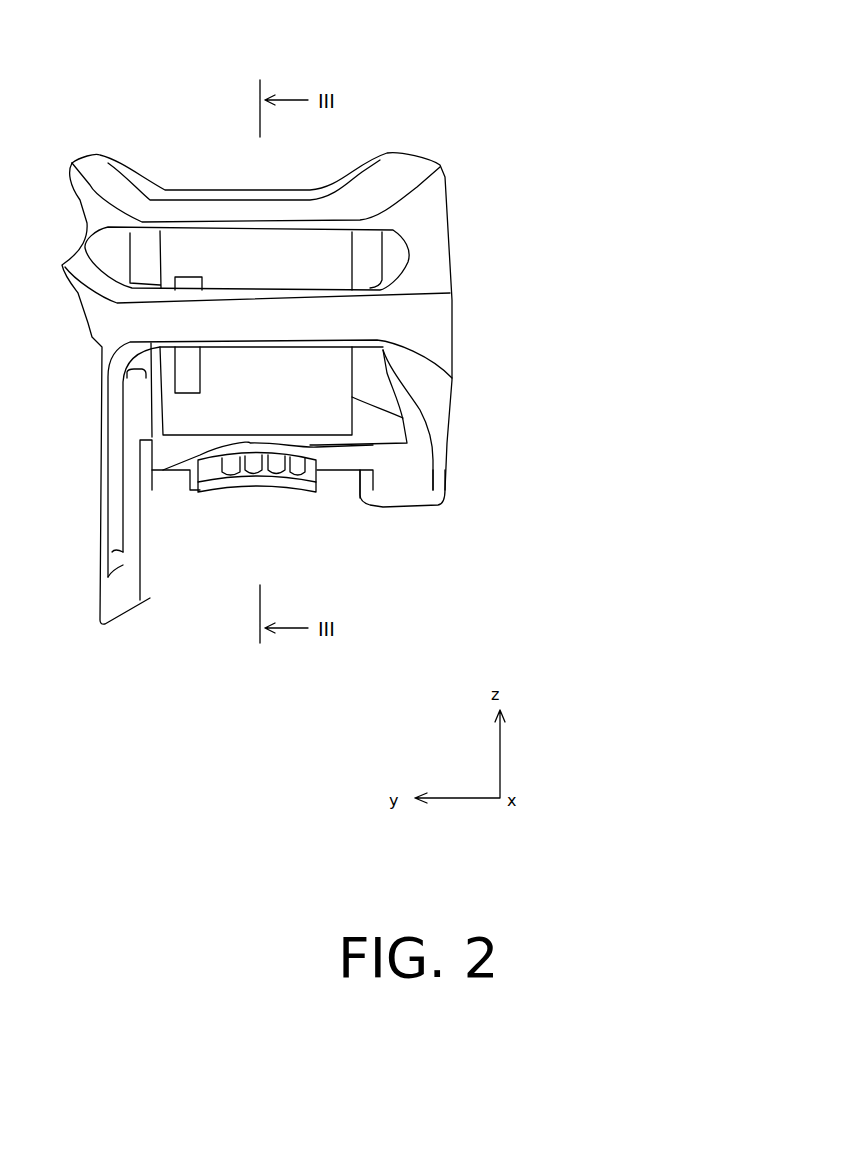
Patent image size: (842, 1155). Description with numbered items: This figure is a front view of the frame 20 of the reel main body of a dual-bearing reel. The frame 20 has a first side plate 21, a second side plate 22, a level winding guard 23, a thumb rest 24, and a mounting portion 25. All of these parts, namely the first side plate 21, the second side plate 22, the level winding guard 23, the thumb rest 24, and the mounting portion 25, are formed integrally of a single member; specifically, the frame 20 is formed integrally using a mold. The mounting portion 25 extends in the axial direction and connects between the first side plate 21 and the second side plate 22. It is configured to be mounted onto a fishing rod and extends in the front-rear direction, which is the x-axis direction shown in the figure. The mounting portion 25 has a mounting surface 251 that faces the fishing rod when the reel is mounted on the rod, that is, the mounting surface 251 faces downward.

The frame 20 is at (387, 115).
The first side plate 21 is at (128, 605).
The second side plate 22 is at (412, 510).
The level winding guard 23 is at (223, 323).
The thumb rest 24 is at (218, 212).
The mounting portion 25 is at (303, 492).
The mounting surface 251 is at (253, 490).